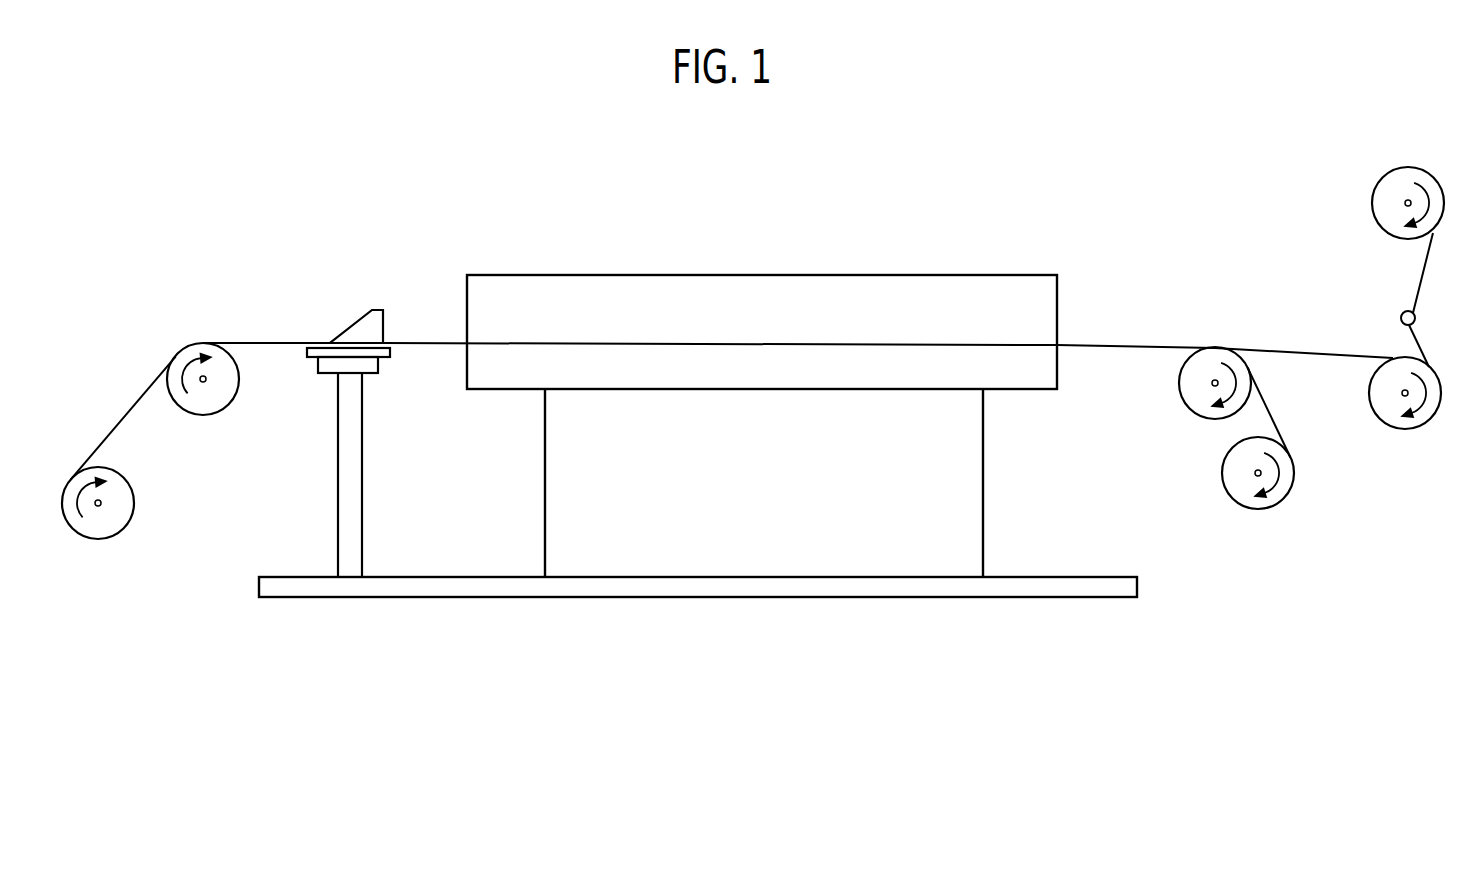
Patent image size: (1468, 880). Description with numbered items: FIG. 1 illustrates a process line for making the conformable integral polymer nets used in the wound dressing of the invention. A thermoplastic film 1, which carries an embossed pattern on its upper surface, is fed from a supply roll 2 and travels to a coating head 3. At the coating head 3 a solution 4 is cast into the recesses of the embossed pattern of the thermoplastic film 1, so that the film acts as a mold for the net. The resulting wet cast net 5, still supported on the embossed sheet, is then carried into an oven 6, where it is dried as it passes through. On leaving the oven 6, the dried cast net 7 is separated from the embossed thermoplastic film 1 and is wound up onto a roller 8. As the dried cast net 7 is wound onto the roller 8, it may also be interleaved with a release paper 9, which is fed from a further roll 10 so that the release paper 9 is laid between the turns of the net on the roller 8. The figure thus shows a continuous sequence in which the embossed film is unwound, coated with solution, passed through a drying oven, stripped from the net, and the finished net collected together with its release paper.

The thermoplastic film 1 is at (137, 400).
The roll 2 is at (135, 502).
The coating head 3 is at (374, 310).
The solution 4 is at (358, 336).
The wet cast net 5 is at (433, 342).
The oven 6 is at (787, 275).
The dried cast net 7 is at (1290, 348).
The roller 8 is at (1400, 428).
The release paper 9 is at (1415, 276).
The roll 10 is at (1383, 184).